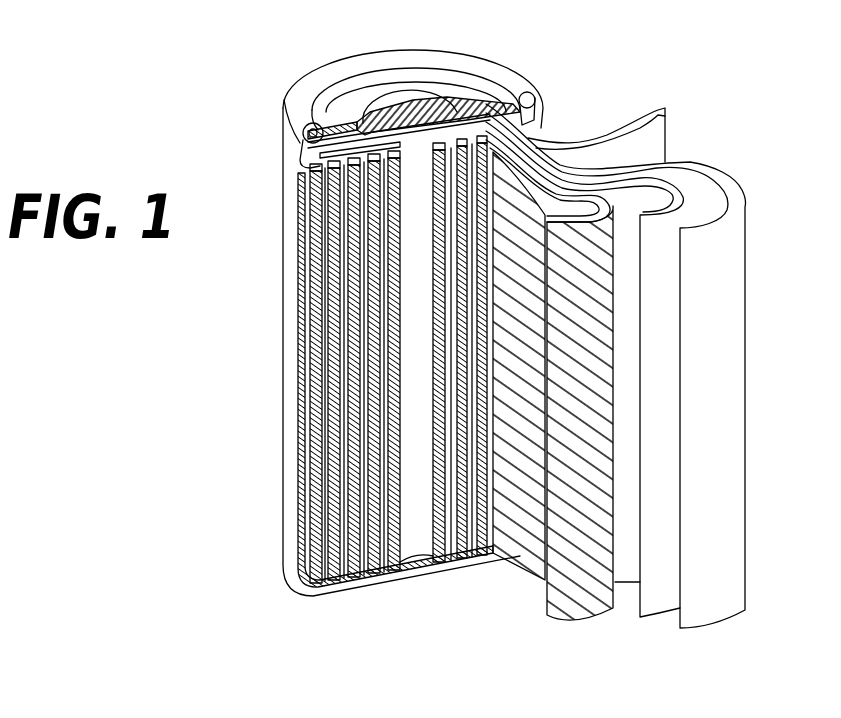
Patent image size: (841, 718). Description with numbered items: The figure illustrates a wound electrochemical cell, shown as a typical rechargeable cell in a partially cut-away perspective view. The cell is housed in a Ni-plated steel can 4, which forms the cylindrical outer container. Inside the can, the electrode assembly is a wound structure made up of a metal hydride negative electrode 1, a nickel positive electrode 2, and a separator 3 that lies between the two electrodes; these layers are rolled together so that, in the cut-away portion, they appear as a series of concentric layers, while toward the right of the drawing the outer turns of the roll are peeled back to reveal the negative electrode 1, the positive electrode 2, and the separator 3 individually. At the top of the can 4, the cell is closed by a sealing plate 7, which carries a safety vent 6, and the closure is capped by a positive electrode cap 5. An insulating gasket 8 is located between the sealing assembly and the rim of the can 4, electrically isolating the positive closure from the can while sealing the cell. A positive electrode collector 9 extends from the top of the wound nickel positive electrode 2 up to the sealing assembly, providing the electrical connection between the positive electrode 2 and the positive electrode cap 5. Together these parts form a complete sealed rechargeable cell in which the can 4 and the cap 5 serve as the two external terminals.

The metal hydride negative electrode 1 is at (735, 297).
The nickel positive electrode 2 is at (582, 614).
The separator 3 is at (658, 607).
The Ni-plated steel can 4 is at (288, 380).
The positive electrode cap 5 is at (390, 100).
The safety vent 6 is at (420, 112).
The sealing plate 7 is at (492, 110).
The insulating gasket 8 is at (303, 157).
The positive electrode collector 9 is at (342, 158).